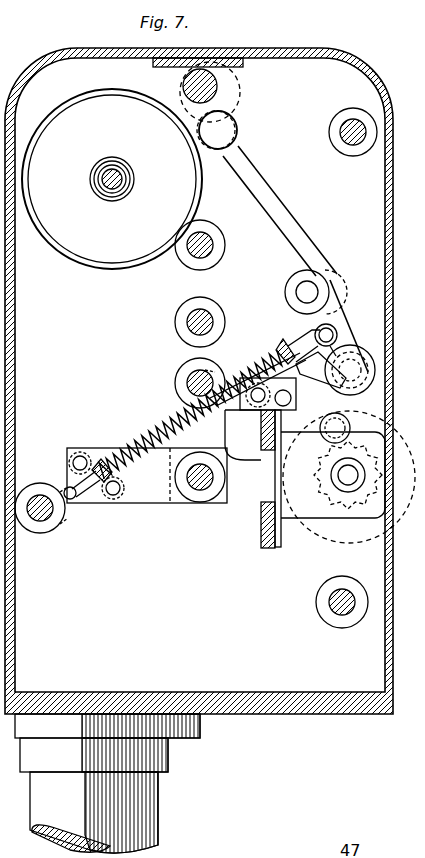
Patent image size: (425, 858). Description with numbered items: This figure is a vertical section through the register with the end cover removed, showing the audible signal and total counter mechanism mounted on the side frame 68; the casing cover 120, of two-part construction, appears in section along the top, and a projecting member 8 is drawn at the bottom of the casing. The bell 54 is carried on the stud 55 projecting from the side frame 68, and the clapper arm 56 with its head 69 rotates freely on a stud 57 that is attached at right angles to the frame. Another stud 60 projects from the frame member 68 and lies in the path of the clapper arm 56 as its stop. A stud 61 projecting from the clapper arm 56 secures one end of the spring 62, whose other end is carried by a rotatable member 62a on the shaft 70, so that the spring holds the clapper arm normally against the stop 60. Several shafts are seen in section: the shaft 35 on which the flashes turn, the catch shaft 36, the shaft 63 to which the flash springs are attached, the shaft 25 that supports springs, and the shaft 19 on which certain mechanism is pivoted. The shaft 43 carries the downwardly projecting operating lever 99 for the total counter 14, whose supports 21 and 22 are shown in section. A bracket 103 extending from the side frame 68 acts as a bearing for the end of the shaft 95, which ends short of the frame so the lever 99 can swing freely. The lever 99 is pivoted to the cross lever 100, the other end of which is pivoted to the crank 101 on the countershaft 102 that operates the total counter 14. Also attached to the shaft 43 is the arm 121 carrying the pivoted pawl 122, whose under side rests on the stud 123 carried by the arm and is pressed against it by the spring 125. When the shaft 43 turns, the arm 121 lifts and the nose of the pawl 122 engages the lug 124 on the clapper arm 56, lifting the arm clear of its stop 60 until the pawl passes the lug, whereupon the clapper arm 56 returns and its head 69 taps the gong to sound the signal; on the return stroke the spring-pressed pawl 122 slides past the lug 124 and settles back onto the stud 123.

The side frame 68 is at (90, 68).
The cover 120 is at (292, 50).
The bell 54 is at (75, 96).
The stud 55 is at (108, 168).
The shaft 25 is at (183, 84).
The head 69 is at (240, 118).
The shaft 63 is at (349, 124).
The clapper arm 56 is at (258, 180).
The shaft 35 is at (207, 233).
The stop 60 is at (310, 282).
The stud 61 is at (332, 328).
The stud 57 is at (356, 354).
The catch shaft 36 is at (186, 322).
The lug 124 is at (290, 346).
The arm 121 is at (241, 368).
The shaft 43 is at (186, 384).
The operating lever 99 is at (178, 406).
The spring 62 is at (146, 436).
The rotatable member 62a is at (70, 500).
The shaft 70 is at (40, 496).
The bracket 103 is at (144, 496).
The shaft 95 is at (197, 494).
The cross lever 100 is at (247, 490).
The spring 125 is at (268, 416).
The support 21 is at (273, 546).
The support 22 is at (270, 443).
The stud 123 is at (286, 404).
The pawl 122 is at (312, 386).
The crank 101 is at (340, 444).
The total counter 14 is at (309, 506).
The countershaft 102 is at (347, 492).
The shaft 19 is at (342, 600).
The outlet pipe 8 is at (150, 805).